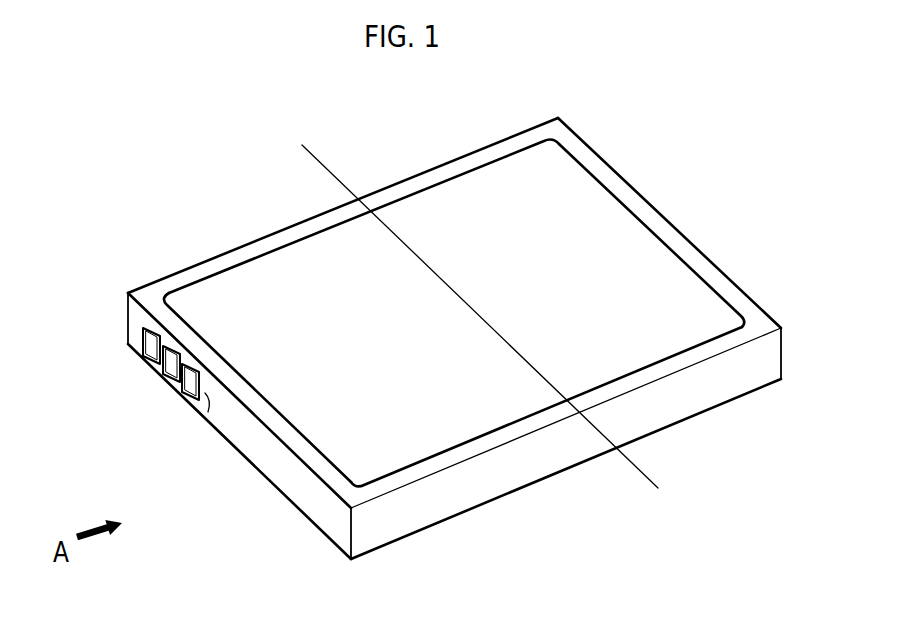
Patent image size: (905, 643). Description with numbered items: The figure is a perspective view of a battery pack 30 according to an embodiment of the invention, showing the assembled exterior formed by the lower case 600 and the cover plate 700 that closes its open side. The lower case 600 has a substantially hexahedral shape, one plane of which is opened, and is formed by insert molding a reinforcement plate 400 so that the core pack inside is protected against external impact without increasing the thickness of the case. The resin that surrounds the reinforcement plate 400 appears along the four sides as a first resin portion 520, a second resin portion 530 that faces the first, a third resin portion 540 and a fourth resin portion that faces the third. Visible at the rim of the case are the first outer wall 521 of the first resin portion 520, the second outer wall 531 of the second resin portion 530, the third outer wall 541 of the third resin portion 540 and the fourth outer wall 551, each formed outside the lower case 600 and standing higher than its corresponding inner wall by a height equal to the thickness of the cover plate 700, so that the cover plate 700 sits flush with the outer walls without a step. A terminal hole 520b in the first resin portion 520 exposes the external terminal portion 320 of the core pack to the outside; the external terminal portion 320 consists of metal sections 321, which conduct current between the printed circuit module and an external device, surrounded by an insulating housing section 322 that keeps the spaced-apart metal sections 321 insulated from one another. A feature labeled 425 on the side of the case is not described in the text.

The battery pack 30 is at (163, 150).
The cover plate 700 is at (486, 198).
The third resin portion 540 is at (287, 227).
The third outer wall 541 is at (203, 273).
The second resin portion 530 is at (653, 202).
The second outer wall 531 is at (702, 265).
The reinforcement plate 400 is at (766, 322).
The metal section 321 is at (150, 362).
The housing section 322 is at (167, 382).
The external terminal portion 320 is at (114, 424).
The terminal hole 520b is at (208, 402).
The first outer wall 521 is at (318, 462).
The first resin portion 520 is at (320, 505).
The fourth outer wall 551 is at (432, 463).
The side surface 425 is at (532, 462).
The lower case 600 is at (708, 433).